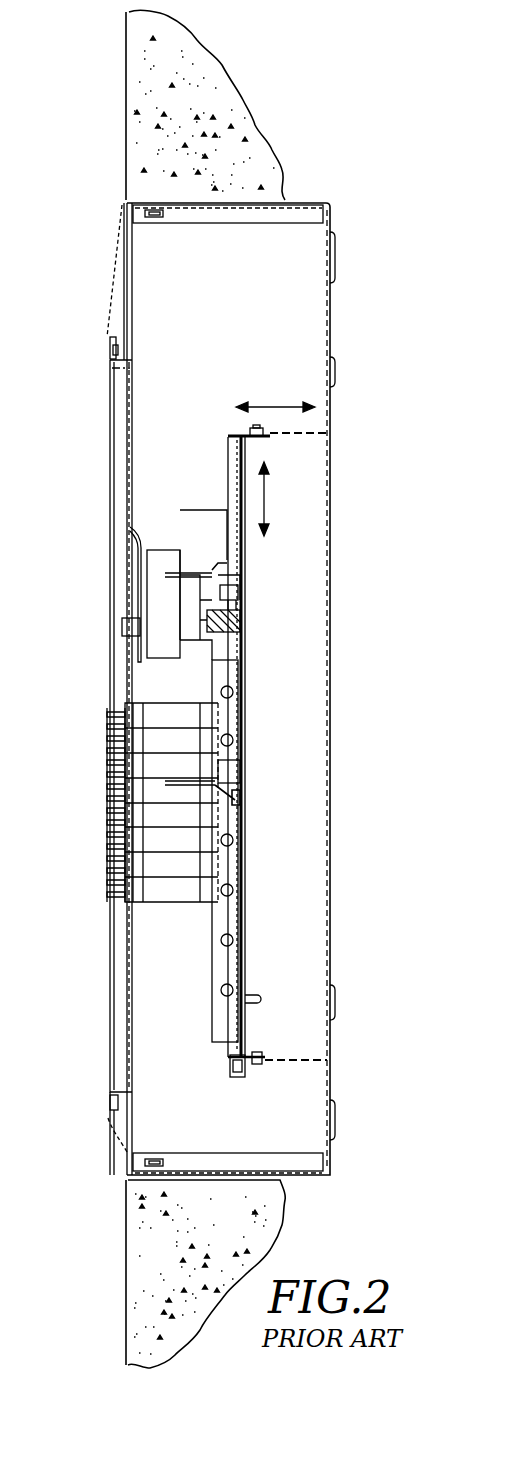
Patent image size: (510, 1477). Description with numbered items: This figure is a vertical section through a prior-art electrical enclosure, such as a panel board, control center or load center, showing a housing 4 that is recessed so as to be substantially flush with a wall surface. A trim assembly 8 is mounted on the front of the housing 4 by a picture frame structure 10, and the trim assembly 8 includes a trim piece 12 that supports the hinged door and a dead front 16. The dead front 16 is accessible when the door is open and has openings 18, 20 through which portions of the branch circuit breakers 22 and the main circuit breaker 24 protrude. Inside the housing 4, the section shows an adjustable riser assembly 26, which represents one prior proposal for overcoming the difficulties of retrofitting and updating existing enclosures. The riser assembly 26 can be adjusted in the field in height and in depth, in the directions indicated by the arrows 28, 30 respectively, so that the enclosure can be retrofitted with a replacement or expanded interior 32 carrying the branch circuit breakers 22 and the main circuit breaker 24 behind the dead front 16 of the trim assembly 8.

The housing 4 is at (313, 204).
The trim assembly 8 is at (114, 263).
The picture frame structure 10 is at (126, 98).
The trim piece 12 is at (110, 1142).
The dead front 16 is at (129, 524).
The opening 18 is at (125, 907).
The opening 20 is at (130, 545).
The branch circuit breaker 22 is at (190, 895).
The main circuit breaker 24 is at (160, 555).
The adjustable riser assembly 26 is at (228, 430).
The arrow 28 is at (267, 493).
The arrow 30 is at (276, 405).
The interior 32 is at (209, 1013).